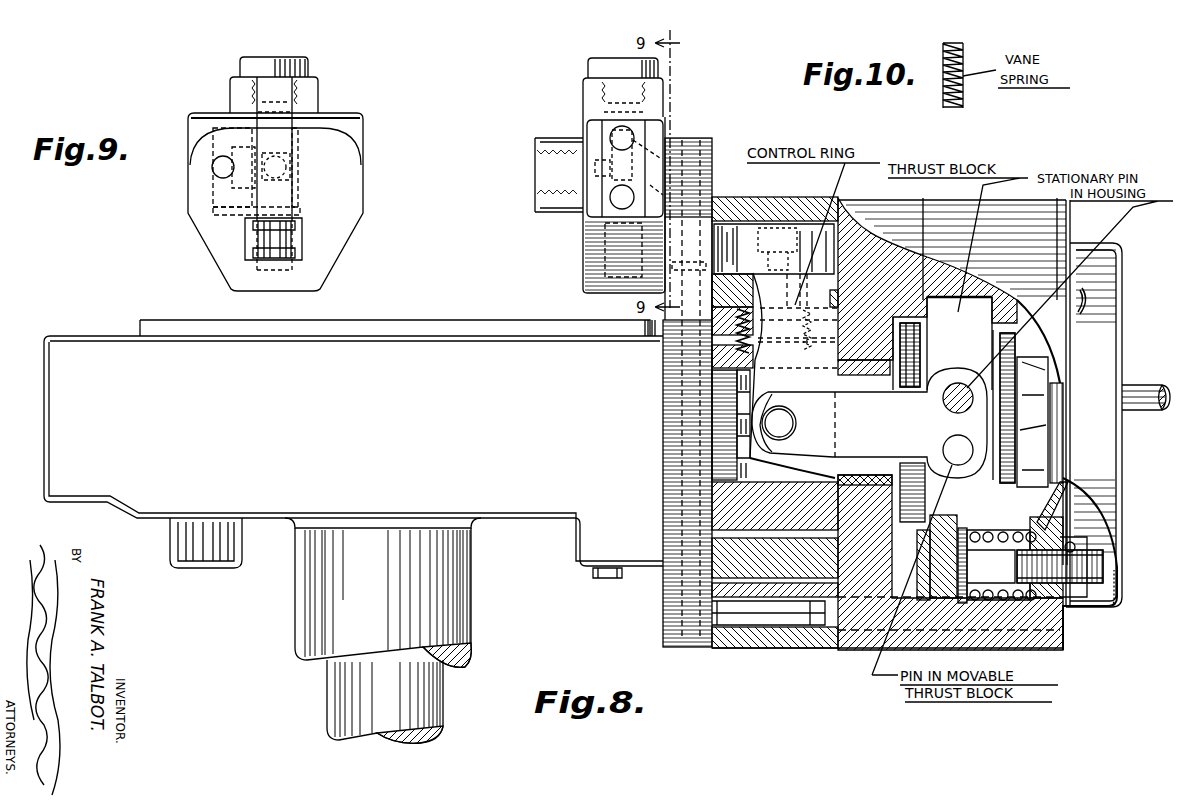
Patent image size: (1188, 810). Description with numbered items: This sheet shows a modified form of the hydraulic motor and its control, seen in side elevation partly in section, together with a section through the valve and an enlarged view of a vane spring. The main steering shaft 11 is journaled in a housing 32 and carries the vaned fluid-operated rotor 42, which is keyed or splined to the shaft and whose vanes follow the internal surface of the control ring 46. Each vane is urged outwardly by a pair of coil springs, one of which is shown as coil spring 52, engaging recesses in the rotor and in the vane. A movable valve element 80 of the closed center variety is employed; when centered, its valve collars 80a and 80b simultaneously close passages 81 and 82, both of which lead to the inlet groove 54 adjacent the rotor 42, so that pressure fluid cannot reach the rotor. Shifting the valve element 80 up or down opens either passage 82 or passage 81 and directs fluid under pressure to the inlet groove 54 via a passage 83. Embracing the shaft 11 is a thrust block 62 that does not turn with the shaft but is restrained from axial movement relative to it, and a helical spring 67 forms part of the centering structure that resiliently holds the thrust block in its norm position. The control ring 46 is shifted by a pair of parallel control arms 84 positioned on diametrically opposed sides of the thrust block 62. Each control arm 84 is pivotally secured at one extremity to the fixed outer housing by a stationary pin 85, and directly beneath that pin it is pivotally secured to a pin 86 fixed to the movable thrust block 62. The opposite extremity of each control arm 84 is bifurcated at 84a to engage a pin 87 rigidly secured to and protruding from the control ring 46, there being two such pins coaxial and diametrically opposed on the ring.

In FIG. 8, the main steering shaft 11 is at (1143, 388).
In FIG. 8, the housing 32 is at (469, 330).
In FIG. 8, the vaned fluid-operated rotor 42 is at (707, 517).
In FIG. 8, the control ring 46 is at (707, 567).
In FIG. 10, the coil spring 52 is at (963, 62).
In FIG. 8, the coil spring 52 is at (722, 367).
In FIG. 8, the inlet groove 54 is at (700, 399).
In FIG. 8, the thrust block 62 is at (982, 323).
In FIG. 8, the helical spring 67 is at (1063, 632).
In FIG. 9, the movable valve element 80 is at (293, 168).
In FIG. 8, the movable valve element 80 is at (593, 177).
In FIG. 9, the valve collar 80a is at (318, 118).
In FIG. 8, the valve collar 80a is at (665, 128).
In FIG. 9, the valve collar 80b is at (287, 215).
In FIG. 8, the valve collar 80b is at (585, 224).
In FIG. 9, the passage 81 is at (223, 193).
In FIG. 8, the passage 81 is at (678, 190).
In FIG. 9, the passage 82 is at (233, 150).
In FIG. 8, the passage 82 is at (668, 155).
In FIG. 8, the passage 83 is at (686, 210).
In FIG. 8, the control arm 84 is at (868, 428).
In FIG. 8, the bifurcated extremity 84a is at (771, 443).
In FIG. 8, the stationary pin 85 is at (943, 403).
In FIG. 8, the pin 86 is at (947, 442).
In FIG. 8, the pin 87 is at (782, 422).